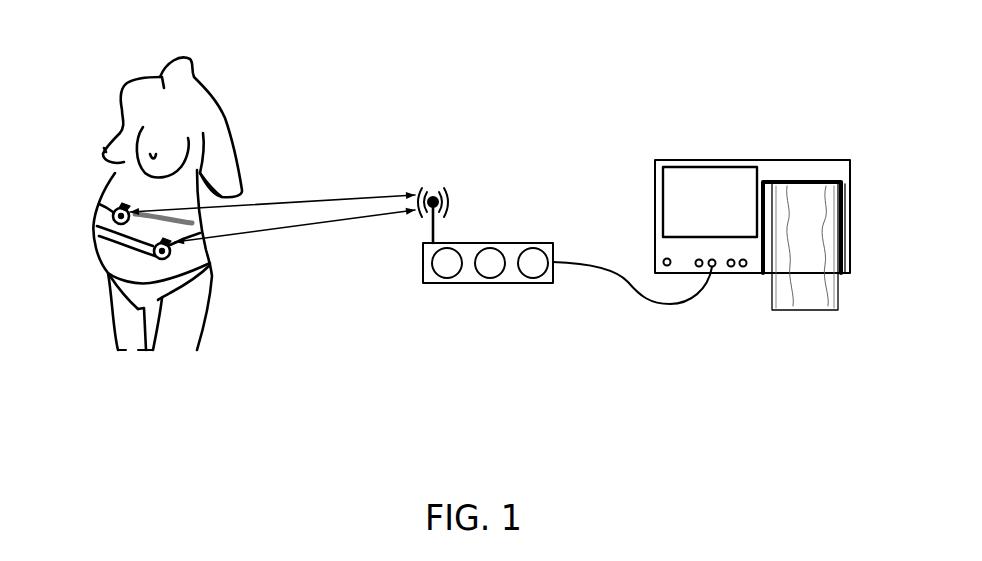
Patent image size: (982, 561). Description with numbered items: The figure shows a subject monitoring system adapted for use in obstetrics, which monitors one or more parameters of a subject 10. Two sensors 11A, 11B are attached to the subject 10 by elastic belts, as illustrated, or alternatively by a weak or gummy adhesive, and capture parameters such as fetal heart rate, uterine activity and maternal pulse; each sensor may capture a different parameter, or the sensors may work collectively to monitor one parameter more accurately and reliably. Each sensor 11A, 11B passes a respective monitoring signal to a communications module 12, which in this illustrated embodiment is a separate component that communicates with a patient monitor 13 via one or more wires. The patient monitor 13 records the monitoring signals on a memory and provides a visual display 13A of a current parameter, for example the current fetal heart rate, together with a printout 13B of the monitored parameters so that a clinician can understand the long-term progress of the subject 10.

The subject 10 is at (207, 88).
The sensor 11A is at (88, 203).
The sensor 11B is at (178, 252).
The communications module 12 is at (488, 283).
The patient monitor 13 is at (721, 240).
The visual display 13A is at (662, 200).
The printout 13B is at (805, 310).